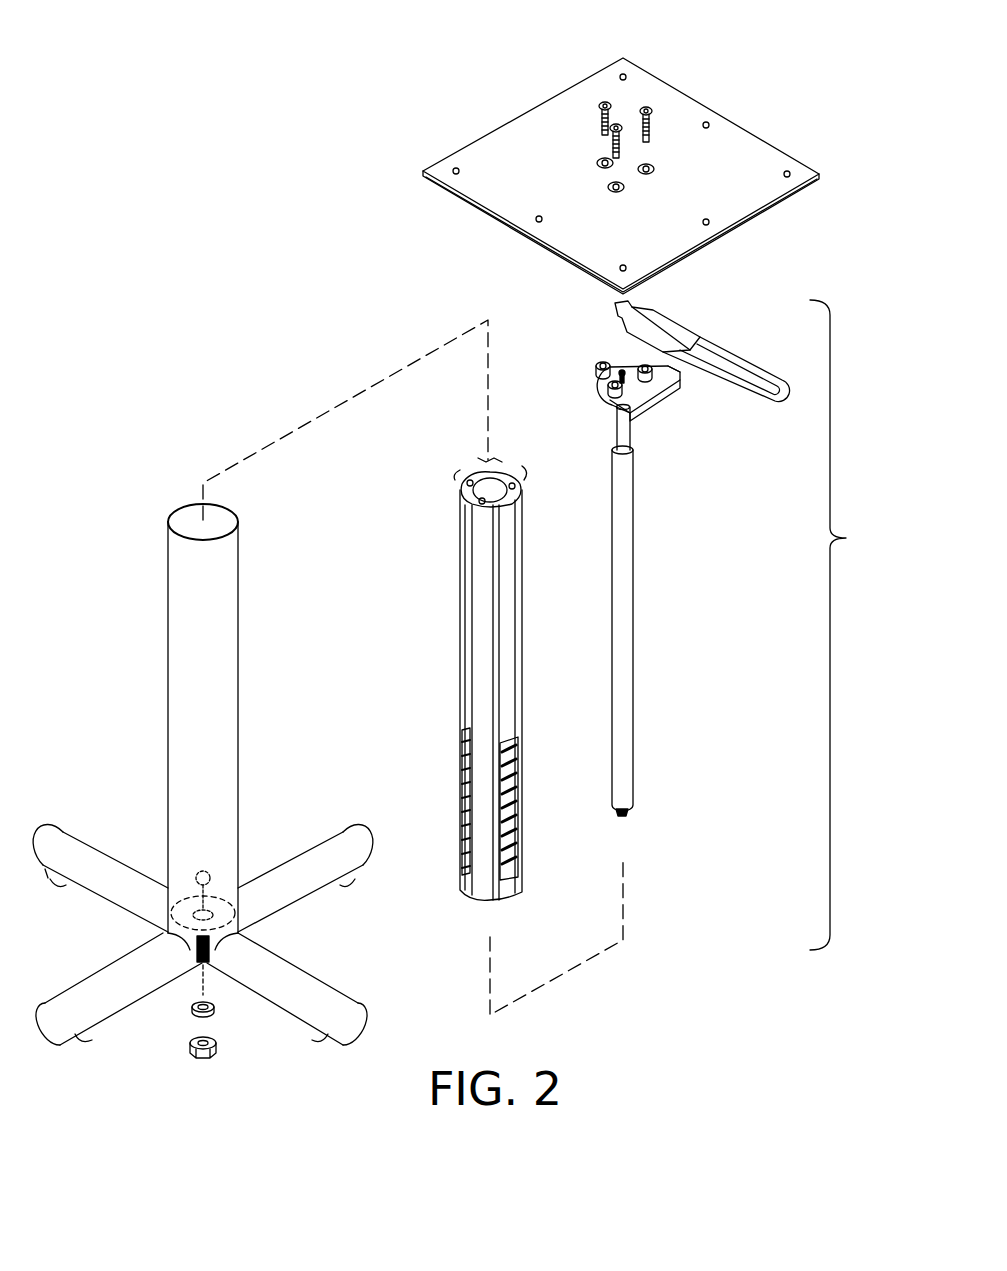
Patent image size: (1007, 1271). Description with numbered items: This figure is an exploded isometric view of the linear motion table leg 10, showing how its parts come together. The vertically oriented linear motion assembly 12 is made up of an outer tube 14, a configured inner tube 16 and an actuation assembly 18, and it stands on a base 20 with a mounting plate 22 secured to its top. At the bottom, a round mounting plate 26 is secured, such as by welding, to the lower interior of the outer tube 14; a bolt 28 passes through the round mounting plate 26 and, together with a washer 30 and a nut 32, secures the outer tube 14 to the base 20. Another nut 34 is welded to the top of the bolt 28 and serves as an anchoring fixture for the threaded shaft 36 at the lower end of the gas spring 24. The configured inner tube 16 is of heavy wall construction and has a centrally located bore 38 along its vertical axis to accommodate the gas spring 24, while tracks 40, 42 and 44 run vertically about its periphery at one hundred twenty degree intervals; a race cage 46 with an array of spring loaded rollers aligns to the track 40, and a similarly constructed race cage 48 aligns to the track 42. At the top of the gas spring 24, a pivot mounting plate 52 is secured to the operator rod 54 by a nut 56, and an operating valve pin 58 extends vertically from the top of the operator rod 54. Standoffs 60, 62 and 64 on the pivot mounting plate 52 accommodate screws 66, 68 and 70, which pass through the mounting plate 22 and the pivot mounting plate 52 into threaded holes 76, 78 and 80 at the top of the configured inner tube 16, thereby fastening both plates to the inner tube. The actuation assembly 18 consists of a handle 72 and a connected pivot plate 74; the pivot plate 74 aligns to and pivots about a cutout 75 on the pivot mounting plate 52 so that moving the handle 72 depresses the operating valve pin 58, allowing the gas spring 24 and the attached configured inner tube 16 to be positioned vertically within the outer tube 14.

The linear motion table leg 10 is at (254, 93).
The vertically oriented linear motion assembly 12 is at (847, 625).
The outer tube 14 is at (242, 782).
The configured inner tube 16 is at (460, 667).
The actuation assembly 18 is at (722, 335).
The base 20 is at (103, 848).
The mounting plate 22 is at (483, 221).
The gas spring 24 is at (636, 616).
The round mounting plate 26 is at (240, 860).
The bolt 28 is at (238, 948).
The washer 30 is at (192, 1010).
The nut 32 is at (214, 1042).
The nut 34 is at (186, 860).
The threaded shaft 36 is at (624, 816).
The bore 38 is at (497, 490).
The track 40 is at (514, 512).
The track 42 is at (468, 512).
The track 44 is at (493, 473).
The race cage 46 is at (520, 798).
The race cage 48 is at (462, 783).
The pivot mounting plate 52 is at (654, 412).
The operator rod 54 is at (630, 440).
The nut 56 is at (588, 383).
The operating valve pin 58 is at (622, 370).
The standoff 60 is at (612, 394).
The standoff 62 is at (597, 366).
The standoff 64 is at (648, 378).
The screw 66 is at (610, 143).
The screw 68 is at (599, 121).
The screw 70 is at (651, 125).
The handle 72 is at (748, 358).
The pivot plate 74 is at (660, 304).
The cutout 75 is at (652, 402).
The threaded hole 76 is at (482, 504).
The threaded hole 78 is at (466, 480).
The threaded hole 80 is at (516, 484).